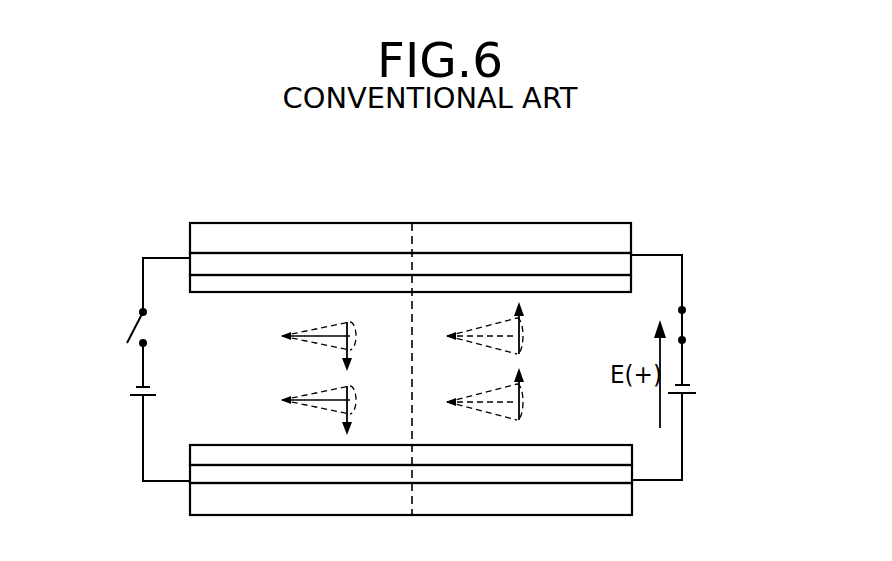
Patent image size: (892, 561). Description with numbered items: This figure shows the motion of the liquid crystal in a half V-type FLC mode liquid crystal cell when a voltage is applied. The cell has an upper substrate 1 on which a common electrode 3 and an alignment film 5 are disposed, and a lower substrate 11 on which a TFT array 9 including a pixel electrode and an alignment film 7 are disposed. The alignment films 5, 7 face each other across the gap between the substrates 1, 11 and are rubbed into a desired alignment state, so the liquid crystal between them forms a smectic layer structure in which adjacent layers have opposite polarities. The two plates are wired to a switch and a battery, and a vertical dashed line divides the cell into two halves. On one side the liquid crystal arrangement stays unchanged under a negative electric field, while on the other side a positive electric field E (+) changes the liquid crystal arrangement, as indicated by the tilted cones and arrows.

The upper substrate 1 is at (631, 228).
The common electrode 3 is at (631, 255).
The alignment film 5 is at (631, 283).
The alignment film 7 is at (632, 452).
The TFT array 9 is at (632, 478).
The lower substrate 11 is at (632, 500).